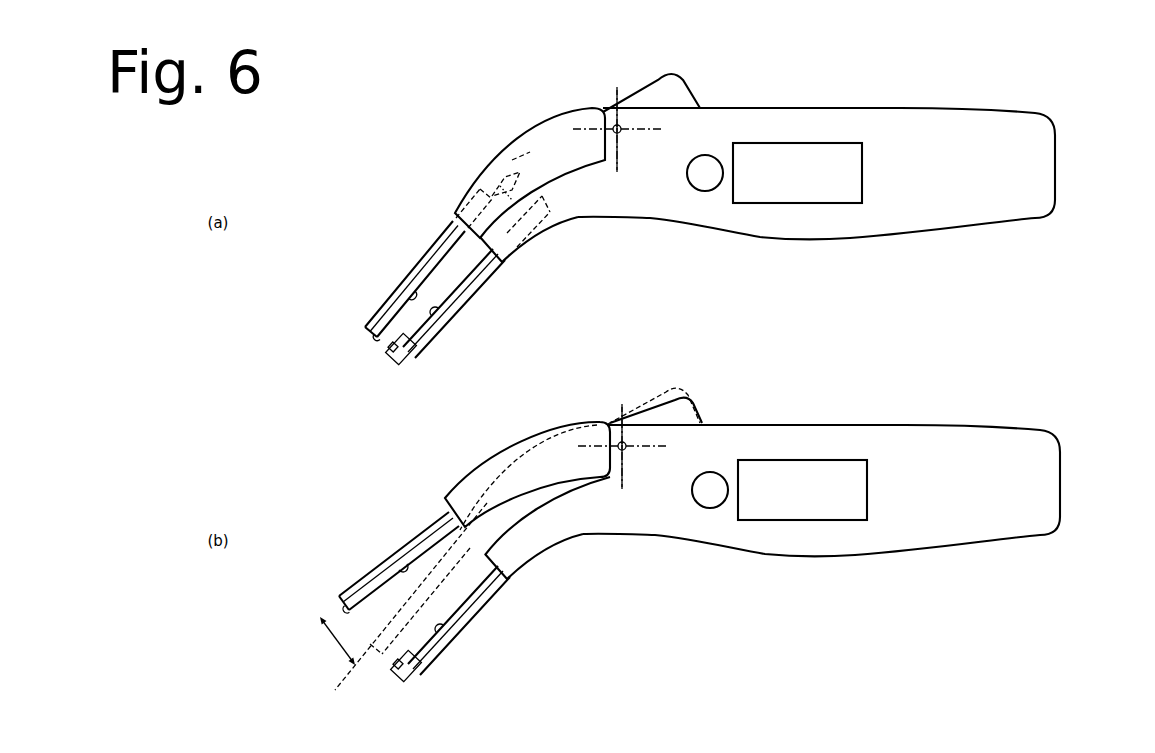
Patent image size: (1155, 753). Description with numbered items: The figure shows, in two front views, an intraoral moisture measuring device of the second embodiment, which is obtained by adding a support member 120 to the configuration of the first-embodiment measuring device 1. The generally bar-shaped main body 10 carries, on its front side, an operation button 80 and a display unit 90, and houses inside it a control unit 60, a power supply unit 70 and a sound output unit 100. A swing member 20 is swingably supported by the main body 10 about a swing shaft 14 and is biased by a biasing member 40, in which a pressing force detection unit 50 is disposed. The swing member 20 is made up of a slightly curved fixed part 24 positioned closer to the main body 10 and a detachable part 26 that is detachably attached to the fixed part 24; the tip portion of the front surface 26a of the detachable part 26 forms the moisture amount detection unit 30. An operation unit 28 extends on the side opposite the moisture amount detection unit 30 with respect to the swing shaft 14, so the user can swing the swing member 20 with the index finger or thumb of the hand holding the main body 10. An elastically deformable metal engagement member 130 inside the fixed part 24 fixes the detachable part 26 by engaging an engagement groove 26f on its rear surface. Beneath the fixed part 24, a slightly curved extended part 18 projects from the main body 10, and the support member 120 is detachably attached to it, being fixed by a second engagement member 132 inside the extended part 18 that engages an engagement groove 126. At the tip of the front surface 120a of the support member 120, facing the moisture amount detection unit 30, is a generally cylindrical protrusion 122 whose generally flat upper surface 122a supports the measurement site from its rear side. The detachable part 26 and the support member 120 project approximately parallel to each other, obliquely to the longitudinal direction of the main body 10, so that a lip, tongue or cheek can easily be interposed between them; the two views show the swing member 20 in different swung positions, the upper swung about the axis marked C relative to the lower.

The intraoral moisture measuring device 1 is at (1018, 67).
The main body 10 is at (898, 121).
The swing shaft 14 is at (606, 110).
The extended part 18 is at (570, 218).
The swing member 20 is at (478, 46).
The fixed part 24 is at (533, 140).
The detachable part 26 is at (420, 268).
The front surface 26a is at (397, 296).
The engagement groove 26f is at (501, 186).
The operation unit 28 is at (647, 99).
The moisture amount detection unit 30 is at (378, 340).
The biasing member 40 is at (648, 121).
The pressing force detection unit 50 is at (660, 121).
The control unit 60 is at (780, 138).
The power supply unit 70 is at (962, 142).
The operation button 80 is at (706, 166).
The display unit 90 is at (797, 166).
The sound output unit 100 is at (877, 144).
The support member 120 is at (458, 309).
The front surface 120a is at (438, 318).
The protrusion 122 is at (389, 358).
The upper surface 122a is at (410, 354).
The engagement groove 126 is at (538, 244).
The engagement member 130 is at (512, 160).
The engagement member 132 is at (557, 218).
The rotation axis C is at (620, 135).